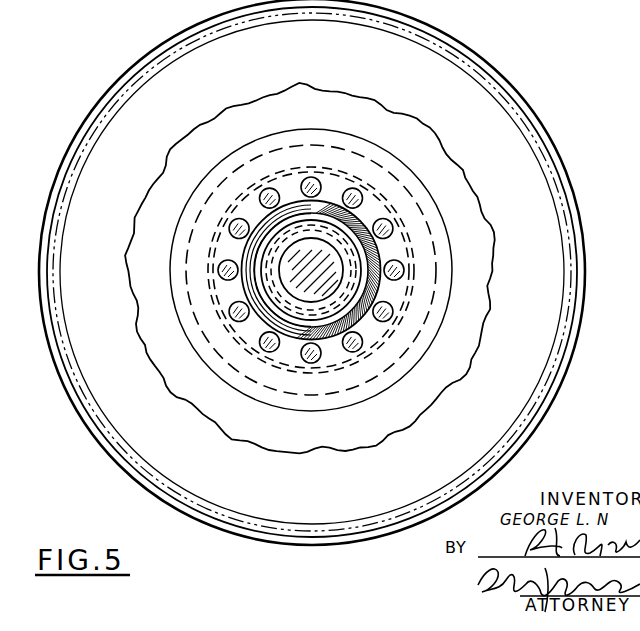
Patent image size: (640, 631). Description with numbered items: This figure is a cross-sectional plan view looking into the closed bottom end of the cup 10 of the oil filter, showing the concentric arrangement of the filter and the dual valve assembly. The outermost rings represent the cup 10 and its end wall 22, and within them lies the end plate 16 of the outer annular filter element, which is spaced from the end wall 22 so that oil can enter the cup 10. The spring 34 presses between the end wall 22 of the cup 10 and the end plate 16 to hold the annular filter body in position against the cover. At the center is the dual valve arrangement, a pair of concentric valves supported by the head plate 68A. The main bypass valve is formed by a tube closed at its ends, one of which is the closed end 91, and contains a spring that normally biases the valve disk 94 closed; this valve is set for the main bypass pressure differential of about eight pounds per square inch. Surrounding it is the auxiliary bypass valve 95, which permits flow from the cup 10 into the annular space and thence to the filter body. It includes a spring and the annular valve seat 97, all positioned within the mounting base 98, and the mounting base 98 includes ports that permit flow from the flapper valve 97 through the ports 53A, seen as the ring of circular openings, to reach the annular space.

The cup 10 is at (531, 109).
The end wall 22 is at (550, 258).
The end plate 16 is at (483, 304).
The head plate 68A is at (443, 322).
The mounting base 98 is at (330, 143).
The ports 53A is at (377, 222).
The annular valve seat 97 is at (309, 361).
The spring 34 is at (248, 257).
The auxiliary bypass valve 95 is at (279, 236).
The closed end of tube 91 is at (278, 304).
The valve disk 94 is at (310, 247).